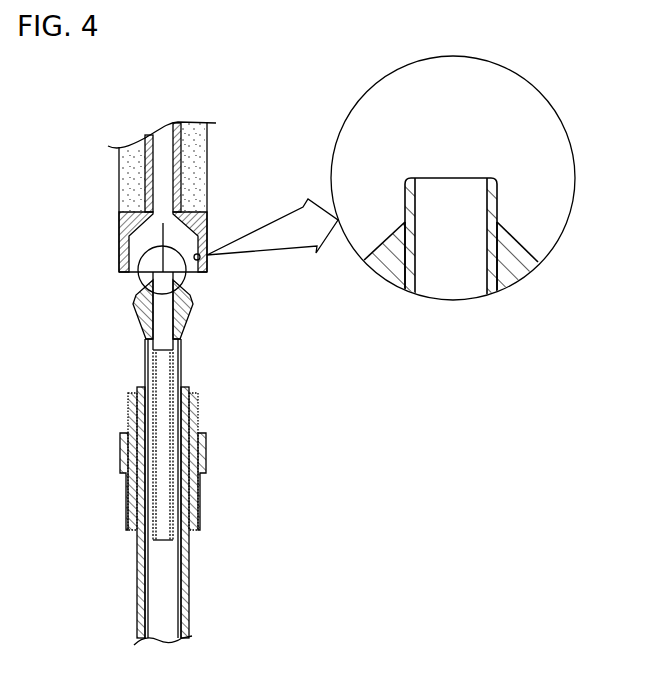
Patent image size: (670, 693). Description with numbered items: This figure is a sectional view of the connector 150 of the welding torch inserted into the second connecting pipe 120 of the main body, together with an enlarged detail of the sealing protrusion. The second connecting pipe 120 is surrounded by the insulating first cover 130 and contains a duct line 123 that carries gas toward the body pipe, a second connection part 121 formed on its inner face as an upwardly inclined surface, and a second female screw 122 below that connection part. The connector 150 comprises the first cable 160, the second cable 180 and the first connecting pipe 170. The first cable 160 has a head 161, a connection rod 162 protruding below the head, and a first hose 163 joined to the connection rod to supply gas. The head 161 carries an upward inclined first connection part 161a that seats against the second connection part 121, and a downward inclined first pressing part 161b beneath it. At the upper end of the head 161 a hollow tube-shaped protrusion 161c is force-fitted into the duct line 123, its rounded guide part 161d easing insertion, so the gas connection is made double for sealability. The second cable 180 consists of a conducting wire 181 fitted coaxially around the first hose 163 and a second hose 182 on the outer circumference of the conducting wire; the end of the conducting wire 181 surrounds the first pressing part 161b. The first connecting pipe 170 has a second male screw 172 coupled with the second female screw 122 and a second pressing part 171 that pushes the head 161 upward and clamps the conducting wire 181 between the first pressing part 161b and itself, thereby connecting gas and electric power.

The second connecting pipe 120 is at (164, 254).
The second connection part 121 is at (150, 222).
The second female screw 122 is at (208, 266).
The duct line 123 is at (181, 170).
The first cover 130 is at (203, 146).
The connector 150 is at (195, 424).
The first cable 160 is at (254, 488).
The head 161 is at (229, 278).
The first connection part 161a is at (190, 290).
The first pressing part 161b is at (185, 328).
The protrusion 161c is at (200, 255).
The guide part 161d is at (497, 180).
The connection rod 162 is at (178, 412).
The first hose 163 is at (177, 375).
The first connecting pipe 170 is at (161, 459).
The second pressing part 171 is at (137, 392).
The second male screw 172 is at (128, 420).
The second cable 180 is at (109, 489).
The conducting wire 181 is at (138, 613).
The second hose 182 is at (137, 583).